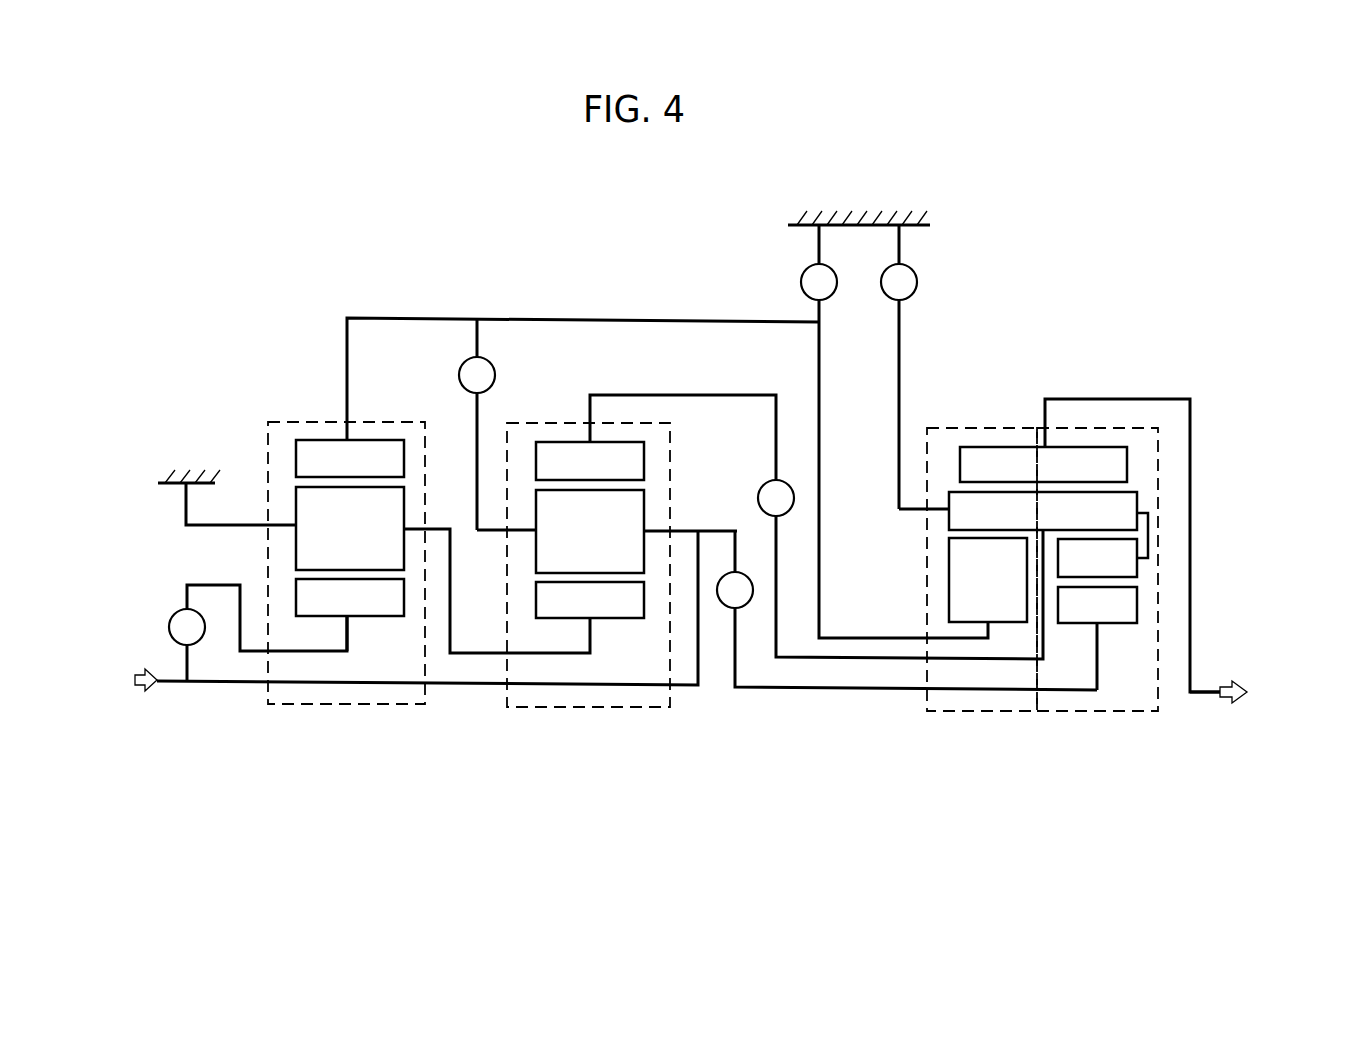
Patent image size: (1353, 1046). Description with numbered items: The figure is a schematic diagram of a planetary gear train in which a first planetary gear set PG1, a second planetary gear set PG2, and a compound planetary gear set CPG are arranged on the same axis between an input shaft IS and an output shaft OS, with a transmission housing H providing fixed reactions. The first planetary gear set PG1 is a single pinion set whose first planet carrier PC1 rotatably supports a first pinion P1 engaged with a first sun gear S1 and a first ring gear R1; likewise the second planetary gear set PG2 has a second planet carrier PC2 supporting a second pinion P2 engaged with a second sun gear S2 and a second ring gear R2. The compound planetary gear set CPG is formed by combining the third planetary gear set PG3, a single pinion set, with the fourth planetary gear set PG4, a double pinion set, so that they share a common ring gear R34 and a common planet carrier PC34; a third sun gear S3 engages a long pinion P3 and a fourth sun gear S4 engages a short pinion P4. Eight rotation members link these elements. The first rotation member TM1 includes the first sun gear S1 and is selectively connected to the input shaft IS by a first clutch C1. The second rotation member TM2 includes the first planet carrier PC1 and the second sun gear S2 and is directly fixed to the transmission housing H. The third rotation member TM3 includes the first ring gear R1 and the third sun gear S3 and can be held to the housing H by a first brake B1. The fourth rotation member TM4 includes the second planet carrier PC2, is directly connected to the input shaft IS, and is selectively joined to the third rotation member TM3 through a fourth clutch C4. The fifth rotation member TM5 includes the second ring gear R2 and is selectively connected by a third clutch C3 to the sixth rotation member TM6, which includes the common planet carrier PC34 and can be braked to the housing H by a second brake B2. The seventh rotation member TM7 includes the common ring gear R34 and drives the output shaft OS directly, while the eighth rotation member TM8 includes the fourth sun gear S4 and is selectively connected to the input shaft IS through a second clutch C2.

The first planetary gear set PG1 is at (345, 712).
The second planetary gear set PG2 is at (584, 714).
The third planetary gear set PG3 is at (977, 717).
The fourth planetary gear set PG4 is at (1097, 621).
The compound planetary gear set CPG is at (1042, 647).
The first ring gear R1 is at (350, 458).
The first pinion P1 is at (350, 528).
The first sun gear S1 is at (350, 597).
The second ring gear R2 is at (590, 461).
The second pinion P2 is at (590, 531).
The second sun gear S2 is at (590, 600).
The common ring gear R34 is at (1043, 464).
The long pinion P3 is at (1043, 511).
The third sun gear S3 is at (988, 580).
The short pinion P4 is at (1097, 558).
The fourth sun gear S4 is at (1097, 605).
The common planet carrier PC34 is at (1149, 533).
The transmission housing H is at (183, 470).
The first planet carrier PC1 is at (218, 529).
The second planet carrier PC2 is at (657, 528).
The first clutch C1 is at (258, 633).
The second clutch C2 is at (907, 611).
The third clutch C3 is at (900, 569).
The fourth clutch C4 is at (477, 425).
The first brake B1 is at (894, 431).
The second brake B2 is at (899, 367).
The first rotation member TM1 is at (350, 640).
The second rotation member TM2 is at (478, 656).
The third rotation member TM3 is at (603, 316).
The fourth rotation member TM4 is at (480, 533).
The fifth rotation member TM5 is at (663, 394).
The sixth rotation member TM6 is at (906, 512).
The seventh rotation member TM7 is at (1113, 398).
The eighth rotation member TM8 is at (1099, 656).
The input shaft IS is at (168, 718).
The output shaft OS is at (1203, 728).